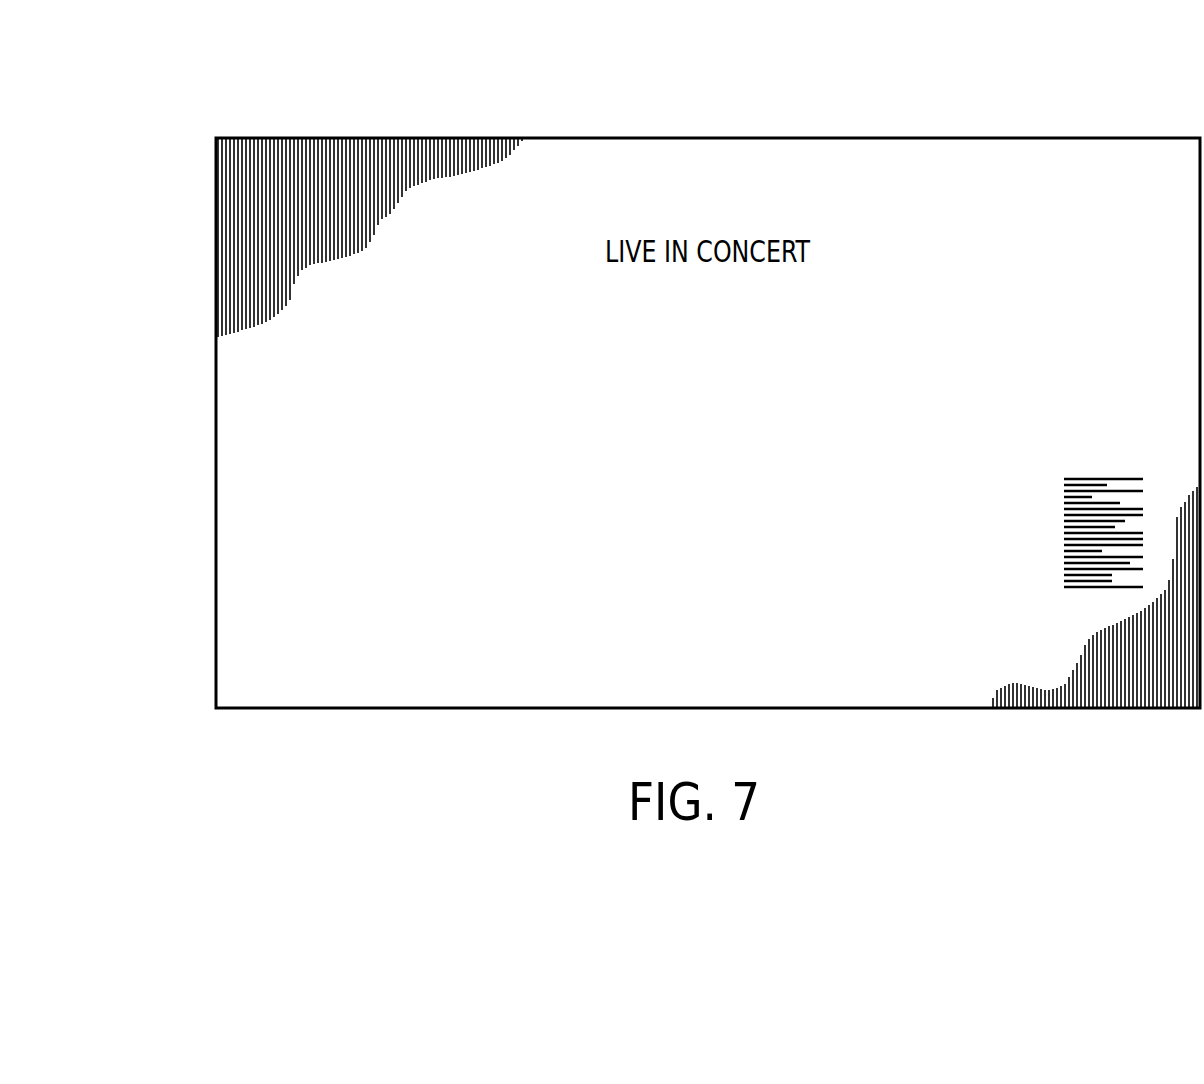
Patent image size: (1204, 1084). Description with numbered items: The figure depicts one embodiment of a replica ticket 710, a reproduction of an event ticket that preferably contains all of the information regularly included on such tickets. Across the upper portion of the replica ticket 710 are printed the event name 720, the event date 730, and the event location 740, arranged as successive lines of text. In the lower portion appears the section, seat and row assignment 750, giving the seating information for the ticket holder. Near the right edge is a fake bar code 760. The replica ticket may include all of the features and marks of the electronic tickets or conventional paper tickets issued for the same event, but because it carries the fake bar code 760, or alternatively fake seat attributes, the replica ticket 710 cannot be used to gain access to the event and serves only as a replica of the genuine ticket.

The replica ticket 710 is at (186, 121).
The event name 720 is at (813, 205).
The event date 730 is at (870, 290).
The event location 740 is at (833, 320).
The section, seat and row assignment 750 is at (707, 575).
The fake bar code 760 is at (1098, 589).